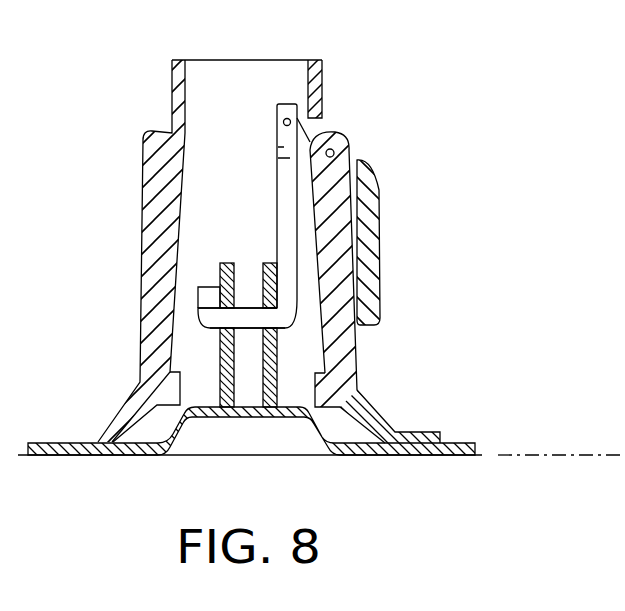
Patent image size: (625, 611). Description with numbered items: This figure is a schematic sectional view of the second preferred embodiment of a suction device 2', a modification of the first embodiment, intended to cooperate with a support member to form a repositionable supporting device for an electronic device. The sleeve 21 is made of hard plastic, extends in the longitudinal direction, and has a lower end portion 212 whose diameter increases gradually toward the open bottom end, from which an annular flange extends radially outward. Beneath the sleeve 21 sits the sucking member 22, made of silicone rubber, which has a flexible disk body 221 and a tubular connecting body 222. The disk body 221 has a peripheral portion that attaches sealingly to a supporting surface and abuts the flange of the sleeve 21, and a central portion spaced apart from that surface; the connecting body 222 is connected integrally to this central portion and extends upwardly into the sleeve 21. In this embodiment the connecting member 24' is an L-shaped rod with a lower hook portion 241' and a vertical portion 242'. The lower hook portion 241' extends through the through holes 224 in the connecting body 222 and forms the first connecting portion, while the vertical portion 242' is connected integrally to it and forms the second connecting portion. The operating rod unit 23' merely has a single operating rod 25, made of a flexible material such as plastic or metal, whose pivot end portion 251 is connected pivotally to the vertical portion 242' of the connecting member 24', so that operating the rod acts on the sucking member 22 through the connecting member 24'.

The suction device 2' is at (321, 259).
The sleeve 21 is at (168, 68).
The lower end portion 212 is at (370, 412).
The sucking member 22 is at (219, 376).
The disk body 221 is at (326, 438).
The tubular connecting body 222 is at (282, 364).
The through holes 224 is at (223, 332).
The operating rod unit 23' is at (394, 264).
The connecting member 24' is at (262, 183).
The lower hook portion 241' is at (262, 305).
The vertical portion 242' is at (193, 174).
The operating rod 25 is at (365, 273).
The pivot end portion 251 is at (275, 110).